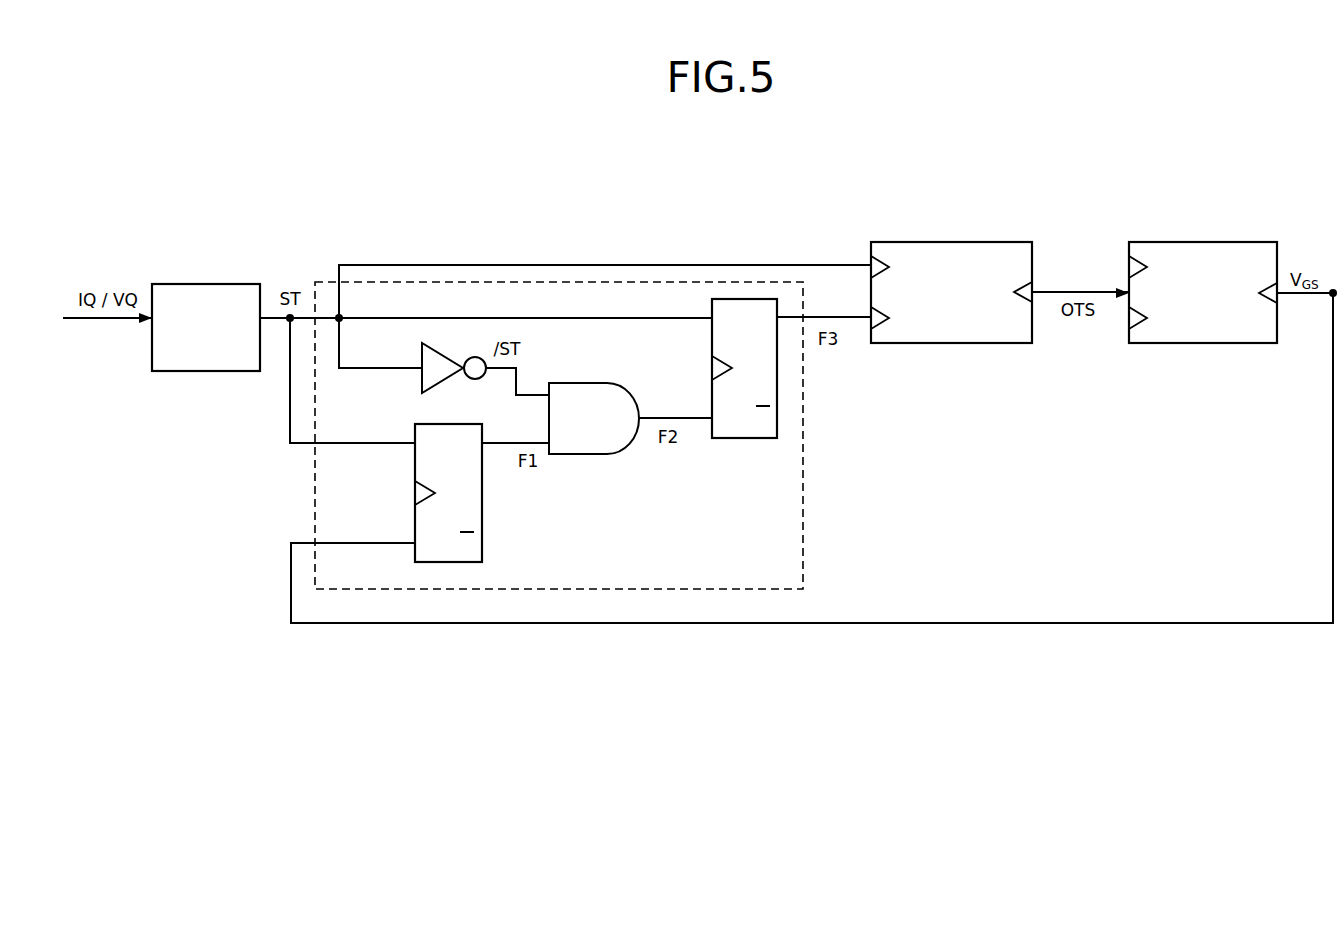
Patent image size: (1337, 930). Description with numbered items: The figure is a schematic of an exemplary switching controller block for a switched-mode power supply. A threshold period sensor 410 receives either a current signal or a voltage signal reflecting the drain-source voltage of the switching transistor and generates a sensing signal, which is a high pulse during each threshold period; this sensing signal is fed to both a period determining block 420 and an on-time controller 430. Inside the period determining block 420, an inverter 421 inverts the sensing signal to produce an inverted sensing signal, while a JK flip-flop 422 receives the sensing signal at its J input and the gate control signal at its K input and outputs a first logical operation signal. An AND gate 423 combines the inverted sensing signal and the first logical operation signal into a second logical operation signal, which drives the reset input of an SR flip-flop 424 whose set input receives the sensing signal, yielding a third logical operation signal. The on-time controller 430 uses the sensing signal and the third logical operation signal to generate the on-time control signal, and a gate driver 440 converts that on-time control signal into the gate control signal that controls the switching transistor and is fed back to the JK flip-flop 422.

The threshold period sensor 410 is at (236, 284).
The period determining block 420 is at (315, 497).
The inverter 421 is at (433, 349).
The JK flip-flop 422 is at (449, 562).
The AND gate 423 is at (576, 383).
The SR flip-flop 424 is at (744, 299).
The on-time controller 430 is at (1006, 242).
The gate driver 440 is at (1168, 242).